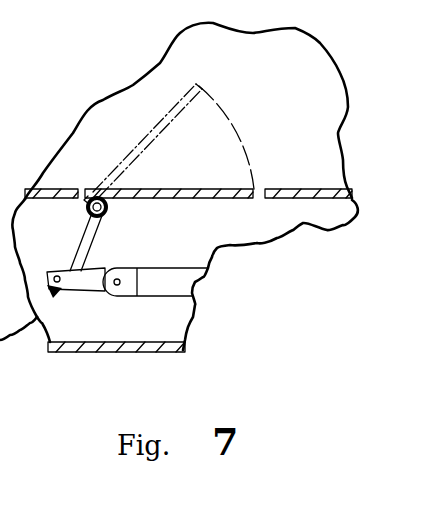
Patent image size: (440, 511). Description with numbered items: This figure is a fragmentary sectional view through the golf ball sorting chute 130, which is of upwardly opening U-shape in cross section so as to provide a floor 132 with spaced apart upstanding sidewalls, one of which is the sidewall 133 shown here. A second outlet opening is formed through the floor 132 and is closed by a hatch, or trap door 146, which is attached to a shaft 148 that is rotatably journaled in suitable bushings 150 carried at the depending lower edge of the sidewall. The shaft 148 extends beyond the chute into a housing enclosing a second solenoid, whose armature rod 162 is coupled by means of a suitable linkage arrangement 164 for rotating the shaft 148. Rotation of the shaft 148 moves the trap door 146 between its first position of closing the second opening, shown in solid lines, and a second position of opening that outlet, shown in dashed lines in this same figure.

The chute 130 is at (203, 186).
The floor 132 is at (320, 190).
The sidewall 133 is at (330, 100).
The trap door 146 is at (232, 190).
The shaft 148 is at (92, 218).
The bushings 150 is at (108, 207).
The armature rod 162 is at (151, 287).
The linkage arrangement 164 is at (93, 290).